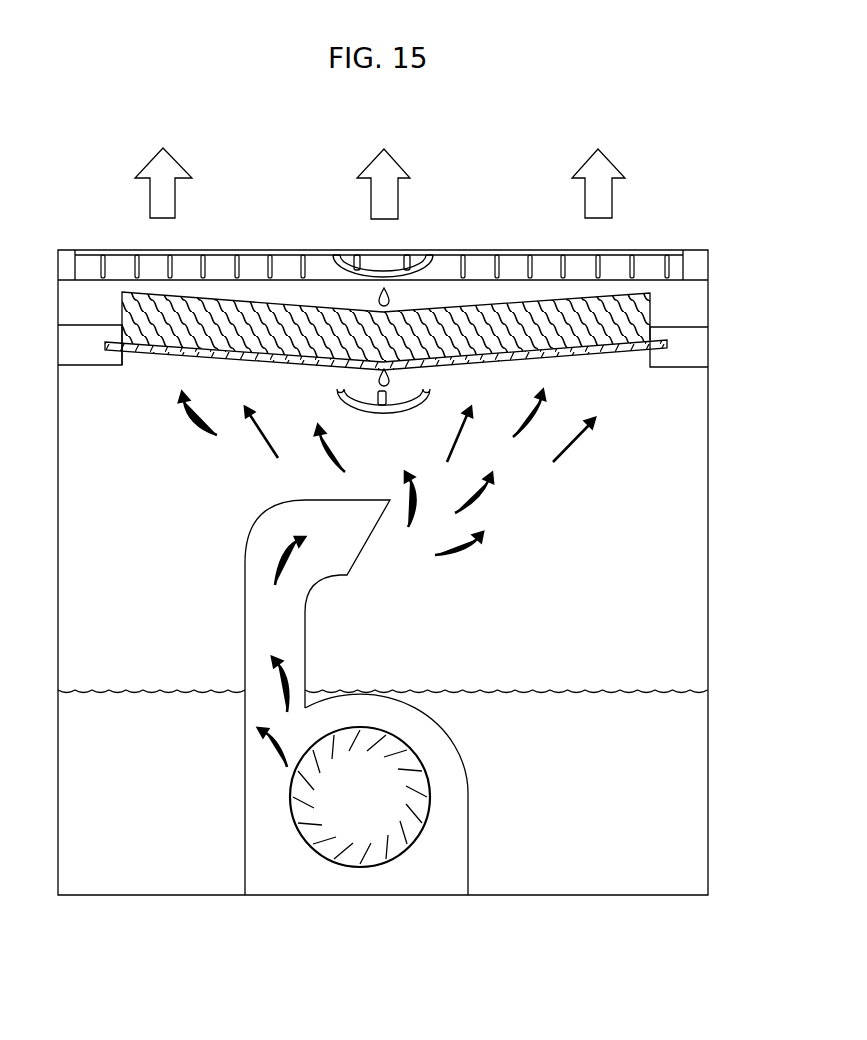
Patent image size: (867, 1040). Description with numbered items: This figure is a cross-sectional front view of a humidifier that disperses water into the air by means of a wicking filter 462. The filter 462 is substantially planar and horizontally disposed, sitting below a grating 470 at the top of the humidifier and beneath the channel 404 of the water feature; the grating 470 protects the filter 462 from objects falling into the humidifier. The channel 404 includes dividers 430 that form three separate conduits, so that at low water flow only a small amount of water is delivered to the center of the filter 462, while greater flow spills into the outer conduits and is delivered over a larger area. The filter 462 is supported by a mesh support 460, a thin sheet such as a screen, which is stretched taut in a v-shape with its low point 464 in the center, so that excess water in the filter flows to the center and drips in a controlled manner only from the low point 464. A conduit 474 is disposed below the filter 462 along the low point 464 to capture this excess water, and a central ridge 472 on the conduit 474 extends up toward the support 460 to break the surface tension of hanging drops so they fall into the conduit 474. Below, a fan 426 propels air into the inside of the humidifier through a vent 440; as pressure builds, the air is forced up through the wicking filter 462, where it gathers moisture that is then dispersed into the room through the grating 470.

The channel 404 is at (372, 260).
The fan 426 is at (420, 758).
The dividers 430 is at (408, 259).
The vent 440 is at (372, 555).
The mesh support 460 is at (272, 366).
The wicking filter 462 is at (650, 311).
The low point 464 is at (370, 366).
The grating 470 is at (174, 256).
The central ridge 472 is at (403, 393).
The conduit 474 is at (376, 412).